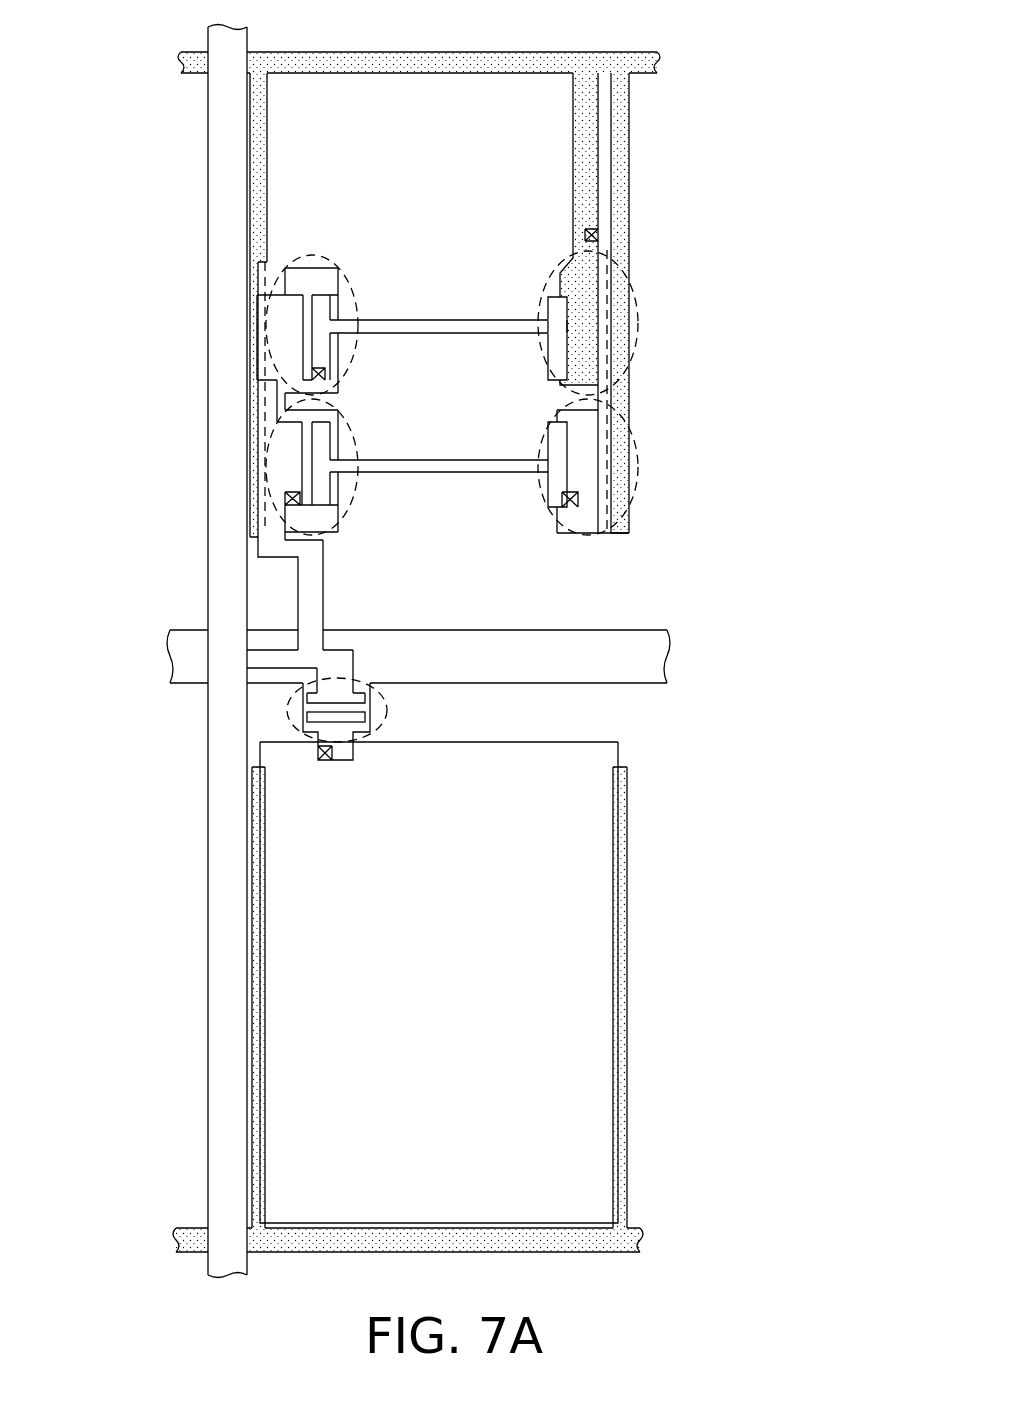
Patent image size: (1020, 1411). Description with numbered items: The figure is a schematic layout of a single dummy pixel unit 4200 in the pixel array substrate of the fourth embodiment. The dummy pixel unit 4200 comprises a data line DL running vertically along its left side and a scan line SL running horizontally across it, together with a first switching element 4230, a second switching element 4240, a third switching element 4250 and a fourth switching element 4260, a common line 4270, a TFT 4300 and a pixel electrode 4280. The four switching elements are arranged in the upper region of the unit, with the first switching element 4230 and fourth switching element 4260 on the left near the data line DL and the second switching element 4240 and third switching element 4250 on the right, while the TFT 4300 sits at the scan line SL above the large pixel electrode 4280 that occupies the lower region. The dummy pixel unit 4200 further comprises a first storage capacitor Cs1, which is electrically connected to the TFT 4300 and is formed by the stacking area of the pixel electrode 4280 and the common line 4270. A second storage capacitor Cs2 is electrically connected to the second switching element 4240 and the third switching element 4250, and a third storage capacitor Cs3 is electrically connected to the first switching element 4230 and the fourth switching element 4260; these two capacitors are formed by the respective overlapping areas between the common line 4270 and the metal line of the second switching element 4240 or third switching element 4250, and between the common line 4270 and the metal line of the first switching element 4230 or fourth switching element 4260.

The dummy pixel unit 4200 is at (866, 1275).
The common line 4270 is at (425, 62).
The data line DL is at (232, 125).
The scan line SL is at (637, 652).
The first switching element 4230 is at (245, 270).
The second switching element 4240 is at (630, 255).
The third switching element 4250 is at (630, 515).
The fourth switching element 4260 is at (250, 488).
The TFT 4300 is at (273, 720).
The pixel electrode 4280 is at (583, 1072).
The first storage capacitor Cs1 is at (265, 1135).
The second storage capacitor Cs2 is at (606, 349).
The third storage capacitor Cs3 is at (268, 365).